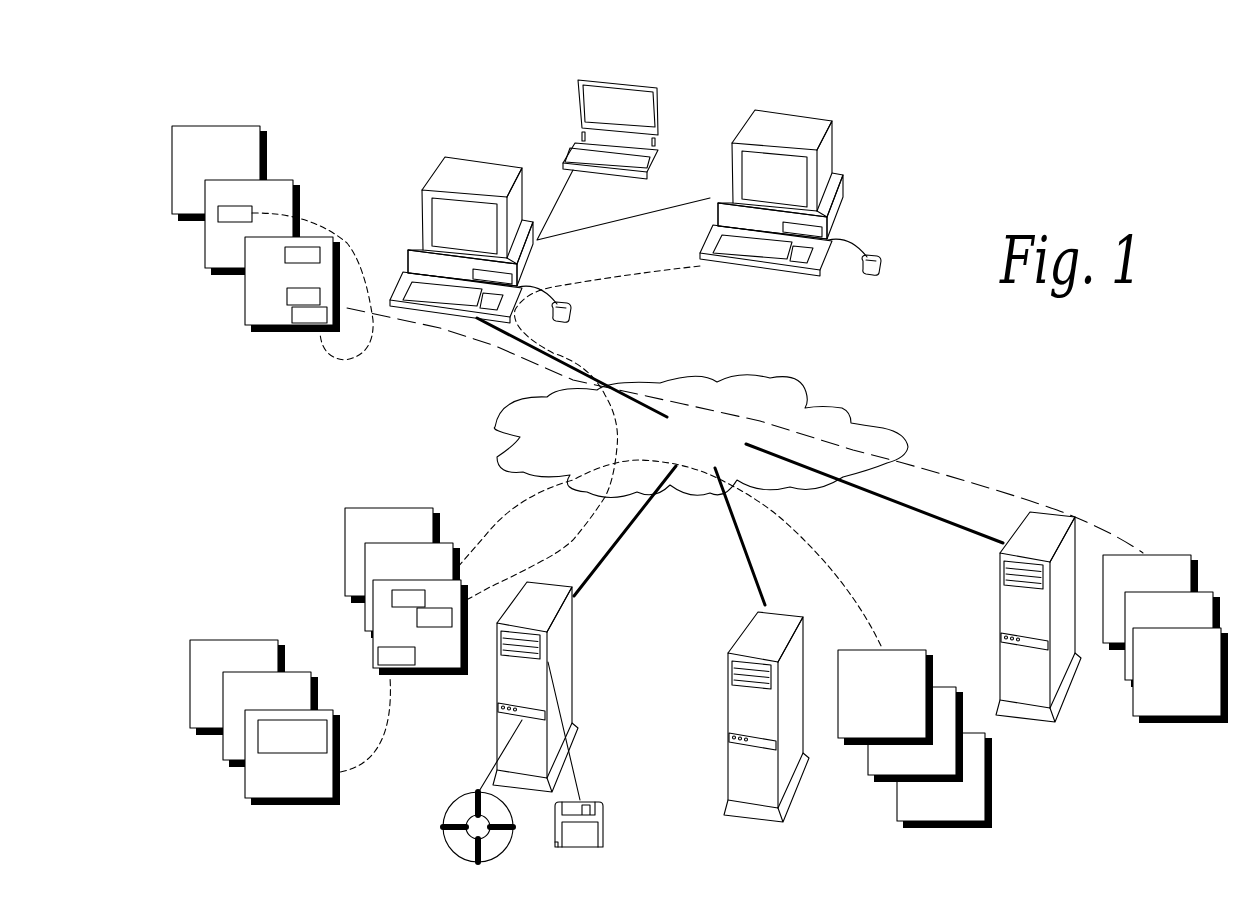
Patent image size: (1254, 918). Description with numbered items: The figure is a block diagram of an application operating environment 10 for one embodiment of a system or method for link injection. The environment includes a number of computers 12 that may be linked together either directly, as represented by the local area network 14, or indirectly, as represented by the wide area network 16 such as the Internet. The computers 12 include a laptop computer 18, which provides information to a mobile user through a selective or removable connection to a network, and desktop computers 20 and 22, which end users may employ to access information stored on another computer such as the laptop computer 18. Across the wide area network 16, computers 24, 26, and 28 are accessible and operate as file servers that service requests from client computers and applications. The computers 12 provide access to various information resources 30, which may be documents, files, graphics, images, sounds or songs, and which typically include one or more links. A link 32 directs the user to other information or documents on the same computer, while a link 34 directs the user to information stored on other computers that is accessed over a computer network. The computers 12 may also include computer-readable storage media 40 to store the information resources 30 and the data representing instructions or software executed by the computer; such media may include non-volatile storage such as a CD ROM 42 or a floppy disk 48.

The application environment 10 is at (987, 138).
The computers 12 is at (924, 370).
The local area network 14 is at (491, 202).
The wide area network 16 is at (838, 388).
The laptop computer 18 is at (662, 98).
The desktop computer 20 is at (532, 257).
The desktop computer 22 is at (847, 212).
The computer 24 is at (572, 630).
The computer 26 is at (777, 607).
The computer 28 is at (1000, 585).
The information resources 30 is at (700, 444).
The link 32 is at (335, 215).
The link 34 is at (465, 348).
The computer-readable storage media 40 is at (530, 762).
The CD ROM 42 is at (445, 815).
The floppy disk 48 is at (605, 823).